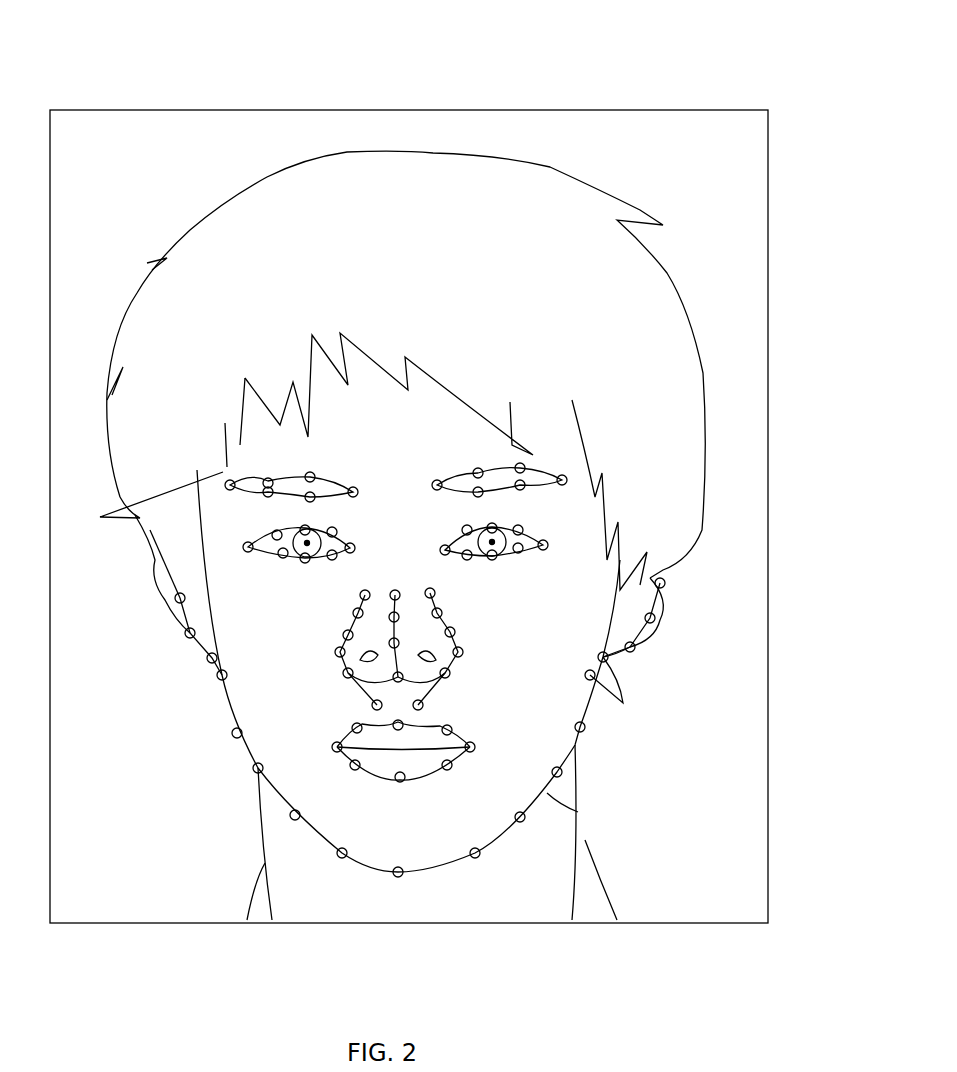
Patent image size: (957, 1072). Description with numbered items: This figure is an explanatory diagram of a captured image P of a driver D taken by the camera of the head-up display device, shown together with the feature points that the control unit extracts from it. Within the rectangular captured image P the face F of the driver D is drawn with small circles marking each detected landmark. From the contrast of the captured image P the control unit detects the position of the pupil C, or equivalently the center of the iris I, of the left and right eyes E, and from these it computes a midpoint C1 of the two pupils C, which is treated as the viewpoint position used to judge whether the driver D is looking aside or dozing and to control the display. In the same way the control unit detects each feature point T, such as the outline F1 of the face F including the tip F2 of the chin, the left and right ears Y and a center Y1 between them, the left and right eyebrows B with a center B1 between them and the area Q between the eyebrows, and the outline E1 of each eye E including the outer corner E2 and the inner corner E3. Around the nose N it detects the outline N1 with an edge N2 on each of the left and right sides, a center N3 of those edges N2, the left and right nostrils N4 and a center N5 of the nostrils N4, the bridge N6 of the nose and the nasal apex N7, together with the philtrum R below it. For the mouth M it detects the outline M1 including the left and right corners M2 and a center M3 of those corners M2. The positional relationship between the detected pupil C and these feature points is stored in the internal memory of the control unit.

The captured image P is at (698, 97).
The driver D is at (684, 274).
The face F is at (228, 703).
The outline of face F1 is at (578, 812).
The tip of chin F2 is at (403, 880).
The feature point T is at (165, 560).
The ears Y is at (175, 590).
The center of ears Y1 is at (434, 595).
The eyebrows B is at (290, 478).
The center of eyebrows B1 is at (400, 480).
The area between eyebrows Q is at (402, 480).
The eyes E is at (277, 535).
The outline of eyes E1 is at (335, 535).
The outer corner of eye E2 is at (248, 550).
The inner corner of eye E3 is at (352, 550).
The iris I is at (283, 556).
The pupil C is at (303, 565).
The midpoint of pupils C1 is at (396, 550).
The nose N is at (360, 595).
The outline of nose N1 is at (346, 633).
The edge of nose N2 is at (338, 653).
The center of edges of nose N3 is at (405, 680).
The nostrils N4 is at (345, 675).
The center of nostrils N5 is at (380, 683).
The bridge of nose N6 is at (397, 590).
The nasal apex N7 is at (440, 615).
The philtrum R is at (424, 706).
The mouth M is at (357, 772).
The outline of mouth M1 is at (450, 768).
The corners of mouth M2 is at (340, 750).
The center of corners of mouth M3 is at (403, 780).